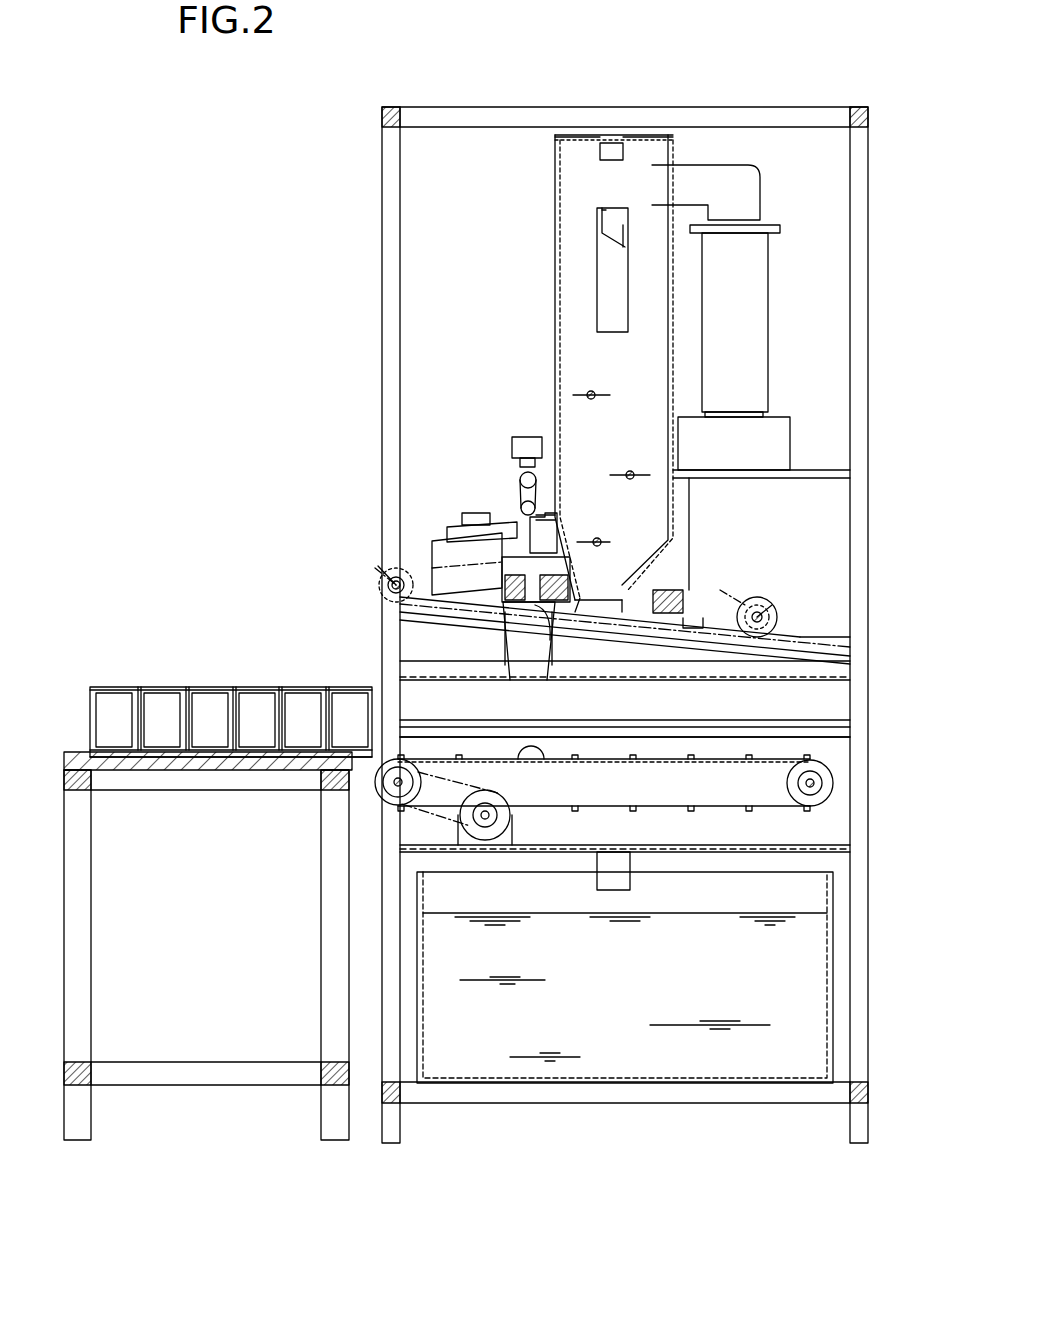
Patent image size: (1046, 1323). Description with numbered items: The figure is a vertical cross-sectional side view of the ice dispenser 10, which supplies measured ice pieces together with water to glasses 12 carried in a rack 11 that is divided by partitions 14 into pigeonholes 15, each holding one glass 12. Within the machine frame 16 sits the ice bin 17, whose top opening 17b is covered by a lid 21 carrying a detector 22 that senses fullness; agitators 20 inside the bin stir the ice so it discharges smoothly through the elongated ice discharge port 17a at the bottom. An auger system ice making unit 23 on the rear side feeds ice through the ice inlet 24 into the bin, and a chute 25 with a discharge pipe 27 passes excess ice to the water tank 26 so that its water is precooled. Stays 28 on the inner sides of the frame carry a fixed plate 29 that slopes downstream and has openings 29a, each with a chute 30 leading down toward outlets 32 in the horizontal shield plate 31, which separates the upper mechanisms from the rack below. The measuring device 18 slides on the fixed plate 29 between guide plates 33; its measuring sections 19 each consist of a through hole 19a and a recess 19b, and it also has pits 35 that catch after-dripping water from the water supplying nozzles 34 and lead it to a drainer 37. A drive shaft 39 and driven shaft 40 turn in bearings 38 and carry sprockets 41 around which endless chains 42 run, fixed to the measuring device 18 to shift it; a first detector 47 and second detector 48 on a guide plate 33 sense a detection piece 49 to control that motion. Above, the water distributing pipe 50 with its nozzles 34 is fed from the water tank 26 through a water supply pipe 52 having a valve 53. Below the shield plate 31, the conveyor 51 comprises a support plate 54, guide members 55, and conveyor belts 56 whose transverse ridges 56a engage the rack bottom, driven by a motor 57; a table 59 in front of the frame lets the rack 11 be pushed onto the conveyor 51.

The ice dispenser 10 is at (444, 86).
The rack 11 is at (210, 686).
The glasses 12 is at (118, 700).
The partitions 14 is at (137, 757).
The pigeonholes 15 is at (166, 687).
The machine frame 16 is at (380, 200).
The ice bin 17 is at (555, 202).
The ice discharge port 17a is at (598, 612).
The top opening 17b is at (665, 133).
The measuring device 18 is at (685, 595).
The measuring sections 19 is at (604, 587).
The through hole 19a is at (573, 612).
The recess 19b is at (673, 556).
The agitators 20 is at (578, 393).
The lid 21 is at (585, 136).
The detector 22 is at (630, 141).
The auger system ice making unit 23 is at (745, 270).
The ice inlet 24 is at (748, 178).
The chute 25 is at (600, 283).
The water tank 26 is at (412, 1050).
The discharge pipe 27 is at (622, 873).
The stays 28 is at (822, 640).
The fixed plate 29 is at (622, 612).
The openings 29a is at (540, 640).
The chute 30 is at (505, 632).
The shield plate 31 is at (733, 668).
The outlets 32 is at (505, 665).
The guide plates 33 is at (448, 528).
The water supplying nozzles 34 is at (505, 560).
The pits 35 is at (448, 545).
The drainer 37 is at (692, 629).
The bearings 38 is at (378, 565).
The drive shaft 39 is at (393, 578).
The driven shaft 40 is at (760, 610).
The sprockets 41 is at (375, 568).
The endless chains 42 is at (720, 590).
The first detector 47 is at (462, 513).
The second detector 48 is at (548, 520).
The detection piece 49 is at (552, 548).
The water distributing pipe 50 is at (520, 480).
The conveyor 51 is at (822, 759).
The water supply pipe 52 is at (518, 457).
The valve 53 is at (527, 436).
The support plate 54 is at (592, 763).
The guide members 55 is at (808, 737).
The conveyor belts 56 is at (680, 812).
The transverse ridges 56a is at (532, 762).
The motor 57 is at (502, 818).
The table 59 is at (75, 752).